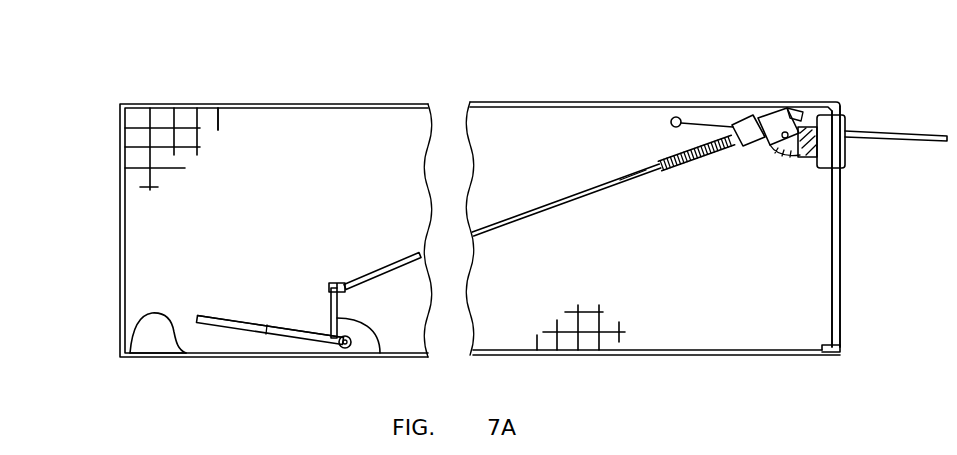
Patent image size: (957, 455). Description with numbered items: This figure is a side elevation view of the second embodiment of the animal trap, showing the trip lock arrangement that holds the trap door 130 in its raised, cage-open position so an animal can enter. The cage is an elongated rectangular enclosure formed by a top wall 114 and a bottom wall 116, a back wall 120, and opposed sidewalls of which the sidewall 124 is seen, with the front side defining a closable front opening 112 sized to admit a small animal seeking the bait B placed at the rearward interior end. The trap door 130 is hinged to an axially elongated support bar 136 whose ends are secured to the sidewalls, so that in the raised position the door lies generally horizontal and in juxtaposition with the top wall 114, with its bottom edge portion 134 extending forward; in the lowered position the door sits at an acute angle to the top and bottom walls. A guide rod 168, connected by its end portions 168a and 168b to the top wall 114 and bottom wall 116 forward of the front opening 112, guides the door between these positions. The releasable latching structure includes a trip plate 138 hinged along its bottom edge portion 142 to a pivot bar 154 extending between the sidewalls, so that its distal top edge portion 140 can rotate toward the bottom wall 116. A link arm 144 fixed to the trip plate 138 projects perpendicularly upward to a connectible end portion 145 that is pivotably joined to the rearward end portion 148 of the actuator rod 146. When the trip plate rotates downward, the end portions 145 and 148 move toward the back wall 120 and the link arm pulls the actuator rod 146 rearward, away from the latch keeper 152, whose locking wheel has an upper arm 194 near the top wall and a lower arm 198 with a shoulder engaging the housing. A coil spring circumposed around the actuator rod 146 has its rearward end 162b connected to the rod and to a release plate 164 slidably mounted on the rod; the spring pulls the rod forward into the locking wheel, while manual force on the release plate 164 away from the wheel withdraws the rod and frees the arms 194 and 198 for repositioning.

The front opening 112 is at (859, 250).
The top wall 114 is at (183, 106).
The bottom wall 116 is at (201, 349).
The back wall 120 is at (120, 176).
The sidewall 124 is at (223, 113).
The trap door 130 is at (703, 122).
The bottom edge portion 134 is at (917, 137).
The support bar 136 is at (672, 120).
The trip plate 138 is at (243, 312).
The top edge portion 140 is at (210, 318).
The bottom edge portion 142 is at (265, 330).
The link arm 144 is at (380, 353).
The connectible end portion 145 is at (331, 288).
The actuator rod 146 is at (513, 218).
The rearward end portion 148 is at (380, 264).
The latch keeper 152 is at (738, 155).
The pivot bar 154 is at (341, 347).
The rearward end of coil spring 162b is at (657, 173).
The release plate 164 is at (633, 178).
The guide rod 168 is at (842, 298).
The end portion of guide rod 168a is at (833, 110).
The end portion of guide rod 168b is at (840, 351).
The upper arm 194 is at (797, 113).
The lower arm 198 is at (800, 158).
The bait B is at (160, 326).